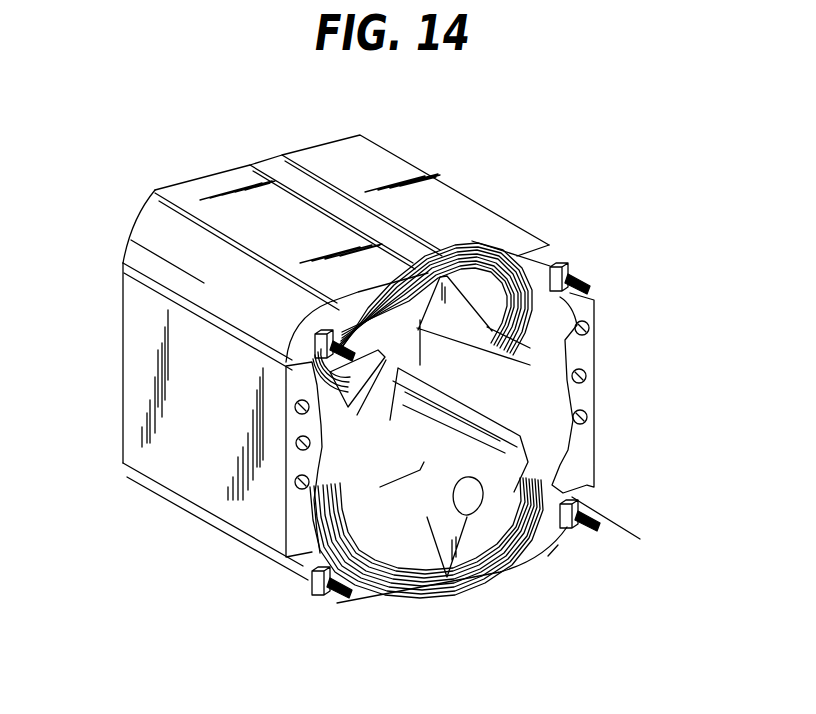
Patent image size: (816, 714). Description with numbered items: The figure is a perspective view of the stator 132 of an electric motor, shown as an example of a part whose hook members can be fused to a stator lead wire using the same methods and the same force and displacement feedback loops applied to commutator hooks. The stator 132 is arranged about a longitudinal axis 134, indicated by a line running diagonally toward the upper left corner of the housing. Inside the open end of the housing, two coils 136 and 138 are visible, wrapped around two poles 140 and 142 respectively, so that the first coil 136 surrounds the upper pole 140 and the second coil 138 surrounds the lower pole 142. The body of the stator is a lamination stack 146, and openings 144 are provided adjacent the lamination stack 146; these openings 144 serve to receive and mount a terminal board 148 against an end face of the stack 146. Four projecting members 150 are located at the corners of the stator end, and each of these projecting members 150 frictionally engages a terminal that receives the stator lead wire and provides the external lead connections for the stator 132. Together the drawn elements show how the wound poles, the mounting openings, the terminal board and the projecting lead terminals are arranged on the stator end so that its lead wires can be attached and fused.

The stator 132 is at (600, 239).
The longitudinal axis 134 is at (130, 238).
The coil 136 is at (550, 263).
The coil 138 is at (530, 548).
The pole 140 is at (455, 330).
The pole 142 is at (393, 525).
The openings 144 is at (297, 443).
The lamination stack 146 is at (145, 457).
The terminal board 148 is at (547, 545).
The projecting members 150 is at (318, 317).